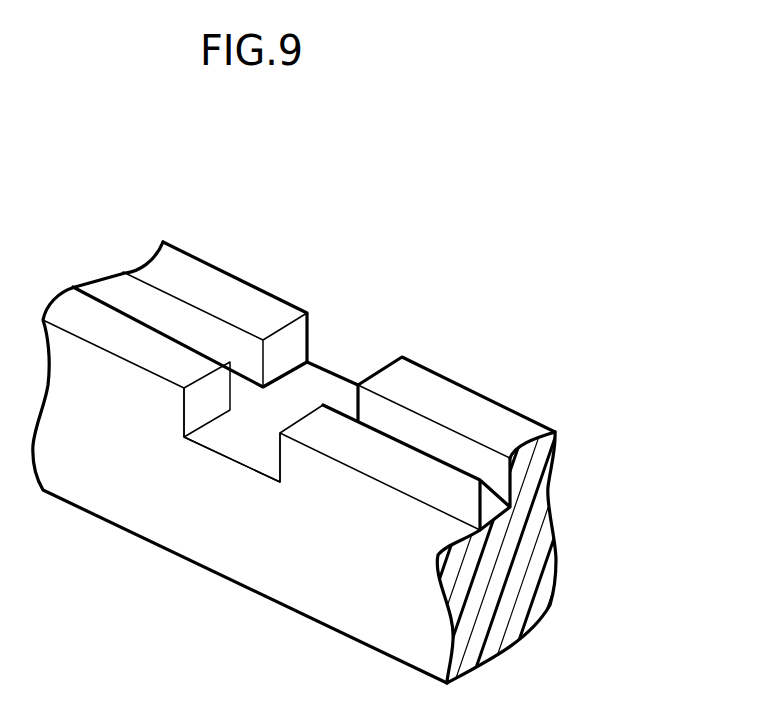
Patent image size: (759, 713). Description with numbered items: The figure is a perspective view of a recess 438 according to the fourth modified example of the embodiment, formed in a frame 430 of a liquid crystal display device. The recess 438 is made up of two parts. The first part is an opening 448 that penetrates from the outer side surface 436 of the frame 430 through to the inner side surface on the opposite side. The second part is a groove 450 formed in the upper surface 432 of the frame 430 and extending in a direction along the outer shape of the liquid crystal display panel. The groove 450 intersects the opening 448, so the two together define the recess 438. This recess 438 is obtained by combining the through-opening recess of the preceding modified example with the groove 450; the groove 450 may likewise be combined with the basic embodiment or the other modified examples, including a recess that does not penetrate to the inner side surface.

The frame 430 is at (503, 387).
The upper surface 432 is at (418, 392).
The outer side surface 436 is at (348, 592).
The recess 438 is at (278, 404).
The opening 448 is at (240, 440).
The groove 450 is at (190, 328).